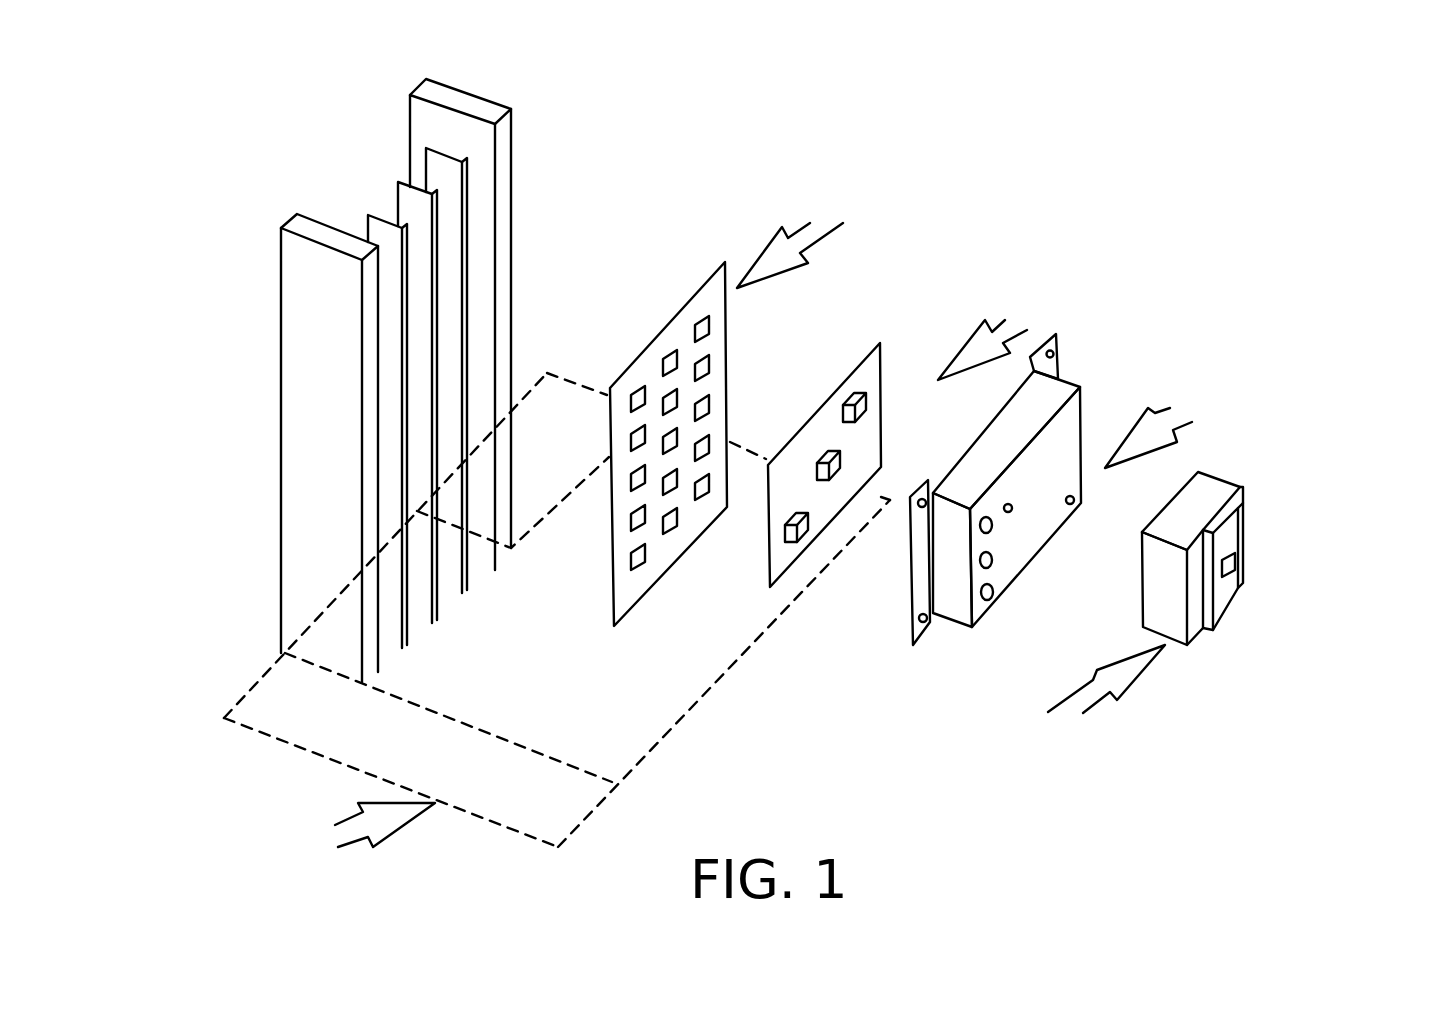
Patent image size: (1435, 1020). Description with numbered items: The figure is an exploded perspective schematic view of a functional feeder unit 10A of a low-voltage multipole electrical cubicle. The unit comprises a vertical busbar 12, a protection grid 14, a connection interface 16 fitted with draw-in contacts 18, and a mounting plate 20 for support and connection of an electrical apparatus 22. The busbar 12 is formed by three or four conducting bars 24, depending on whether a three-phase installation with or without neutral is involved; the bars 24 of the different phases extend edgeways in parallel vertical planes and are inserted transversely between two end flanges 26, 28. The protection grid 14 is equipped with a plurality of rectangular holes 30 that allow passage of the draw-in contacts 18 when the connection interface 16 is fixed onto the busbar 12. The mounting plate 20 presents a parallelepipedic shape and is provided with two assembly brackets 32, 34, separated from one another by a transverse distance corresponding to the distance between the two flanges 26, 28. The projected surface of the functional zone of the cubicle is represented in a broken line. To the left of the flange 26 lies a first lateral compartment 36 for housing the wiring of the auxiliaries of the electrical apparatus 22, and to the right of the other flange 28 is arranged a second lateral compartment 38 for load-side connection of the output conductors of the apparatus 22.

The functional feeder unit 10A is at (1278, 665).
The vertical busbar 12 is at (314, 181).
The protection grid 14 is at (705, 456).
The connection interface 16 is at (863, 485).
The draw-in contacts 18 is at (858, 422).
The mounting plate 20 is at (1029, 461).
The electrical apparatus 22 is at (1230, 602).
The conducting bars 24 is at (435, 170).
The end flange 26 is at (305, 571).
The end flange 28 is at (498, 170).
The rectangular holes 30 is at (707, 495).
The assembly bracket 32 is at (920, 597).
The assembly bracket 34 is at (1053, 354).
The first lateral compartment 36 is at (485, 798).
The second lateral compartment 38 is at (543, 380).